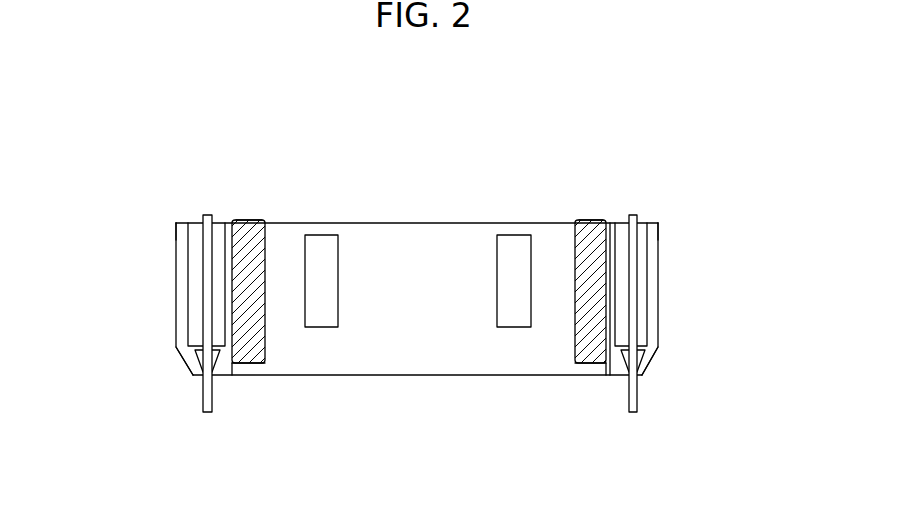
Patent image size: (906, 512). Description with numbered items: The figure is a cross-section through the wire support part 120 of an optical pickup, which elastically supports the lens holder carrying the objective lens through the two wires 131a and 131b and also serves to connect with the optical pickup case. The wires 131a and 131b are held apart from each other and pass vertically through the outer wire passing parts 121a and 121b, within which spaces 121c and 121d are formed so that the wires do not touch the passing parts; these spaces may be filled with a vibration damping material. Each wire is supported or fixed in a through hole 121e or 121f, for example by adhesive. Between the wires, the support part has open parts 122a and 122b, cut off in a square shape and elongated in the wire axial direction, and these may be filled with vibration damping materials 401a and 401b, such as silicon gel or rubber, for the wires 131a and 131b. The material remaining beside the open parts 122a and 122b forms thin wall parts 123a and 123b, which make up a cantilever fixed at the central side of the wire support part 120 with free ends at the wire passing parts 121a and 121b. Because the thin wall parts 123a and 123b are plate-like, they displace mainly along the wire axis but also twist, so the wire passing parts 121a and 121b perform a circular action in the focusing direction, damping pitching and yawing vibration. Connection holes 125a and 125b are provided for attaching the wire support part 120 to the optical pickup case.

The wire support part 120 is at (387, 368).
The wire passing part 121a is at (185, 292).
The wire passing part 121b is at (655, 292).
The space 121c is at (175, 222).
The space 121d is at (655, 223).
The through hole 121e is at (198, 365).
The through hole 121f is at (637, 363).
The open part 122a is at (250, 317).
The open part 122b is at (580, 322).
The thin wall part 123a is at (247, 364).
The thin wall part 123b is at (585, 366).
The connection hole 125a is at (320, 242).
The connection hole 125b is at (513, 242).
The wire 131a is at (216, 216).
The wire 131b is at (636, 214).
The vibration damping material 401a is at (248, 222).
The vibration damping material 401b is at (587, 222).